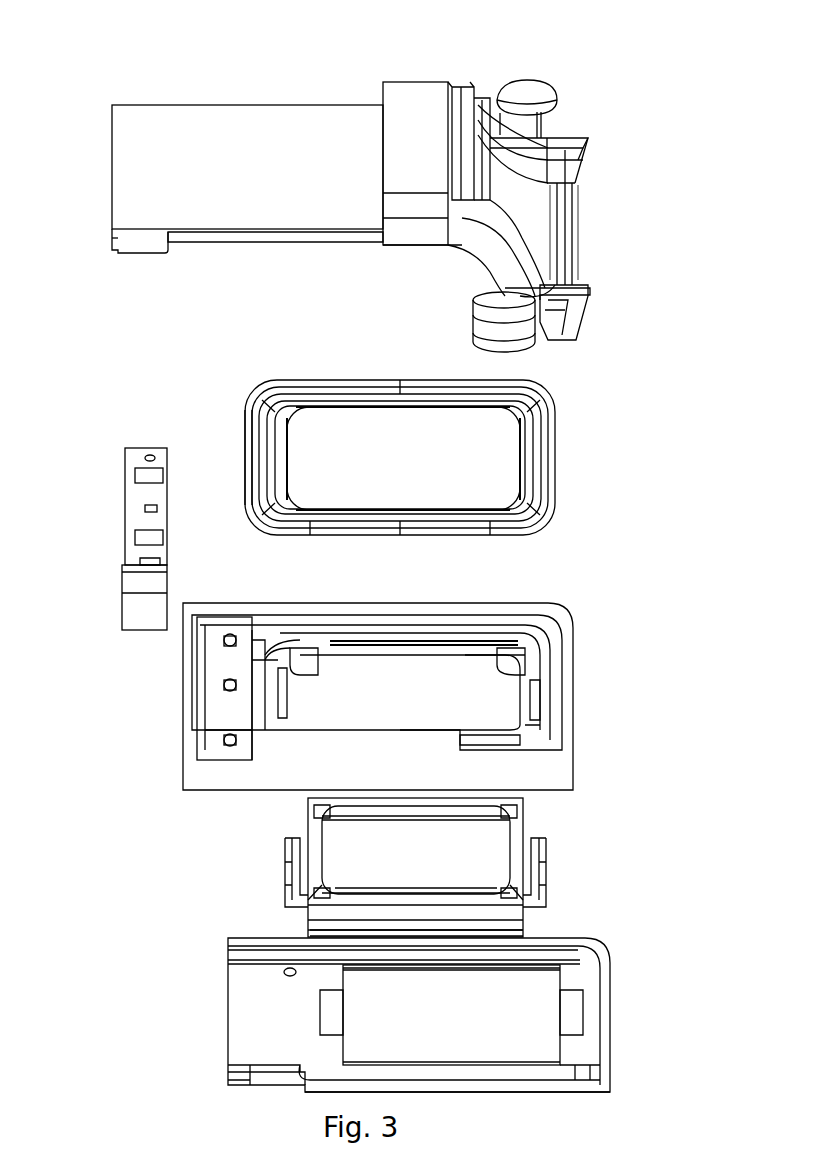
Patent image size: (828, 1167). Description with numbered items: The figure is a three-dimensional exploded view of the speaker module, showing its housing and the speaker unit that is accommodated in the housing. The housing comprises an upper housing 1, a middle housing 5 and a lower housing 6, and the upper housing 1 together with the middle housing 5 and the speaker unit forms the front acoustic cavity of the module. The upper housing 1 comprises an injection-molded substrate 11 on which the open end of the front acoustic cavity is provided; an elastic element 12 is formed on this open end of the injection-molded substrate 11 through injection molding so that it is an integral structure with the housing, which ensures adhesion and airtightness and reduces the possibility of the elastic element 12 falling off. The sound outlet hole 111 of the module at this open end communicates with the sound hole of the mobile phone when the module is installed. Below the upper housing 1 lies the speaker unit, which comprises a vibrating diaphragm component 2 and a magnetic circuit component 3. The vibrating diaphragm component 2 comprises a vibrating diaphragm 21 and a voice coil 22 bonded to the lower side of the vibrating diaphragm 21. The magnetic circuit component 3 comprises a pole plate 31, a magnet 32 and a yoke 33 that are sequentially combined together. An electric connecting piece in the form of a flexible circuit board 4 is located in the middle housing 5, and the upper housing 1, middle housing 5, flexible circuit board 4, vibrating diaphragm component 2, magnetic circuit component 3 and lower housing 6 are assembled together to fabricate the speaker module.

The upper housing 1 is at (401, 200).
The injection-molded substrate 11 is at (528, 333).
The elastic element 12 is at (590, 300).
The sound outlet hole 111 is at (548, 212).
The vibrating diaphragm component 2 is at (402, 424).
The vibrating diaphragm 21 is at (423, 435).
The voice coil 22 is at (252, 512).
The magnetic circuit component 3 is at (417, 867).
The pole plate 31 is at (342, 850).
The magnet 32 is at (527, 818).
The yoke 33 is at (283, 862).
The flexible circuit board 4 is at (135, 518).
The middle housing 5 is at (575, 668).
The lower housing 6 is at (595, 1020).